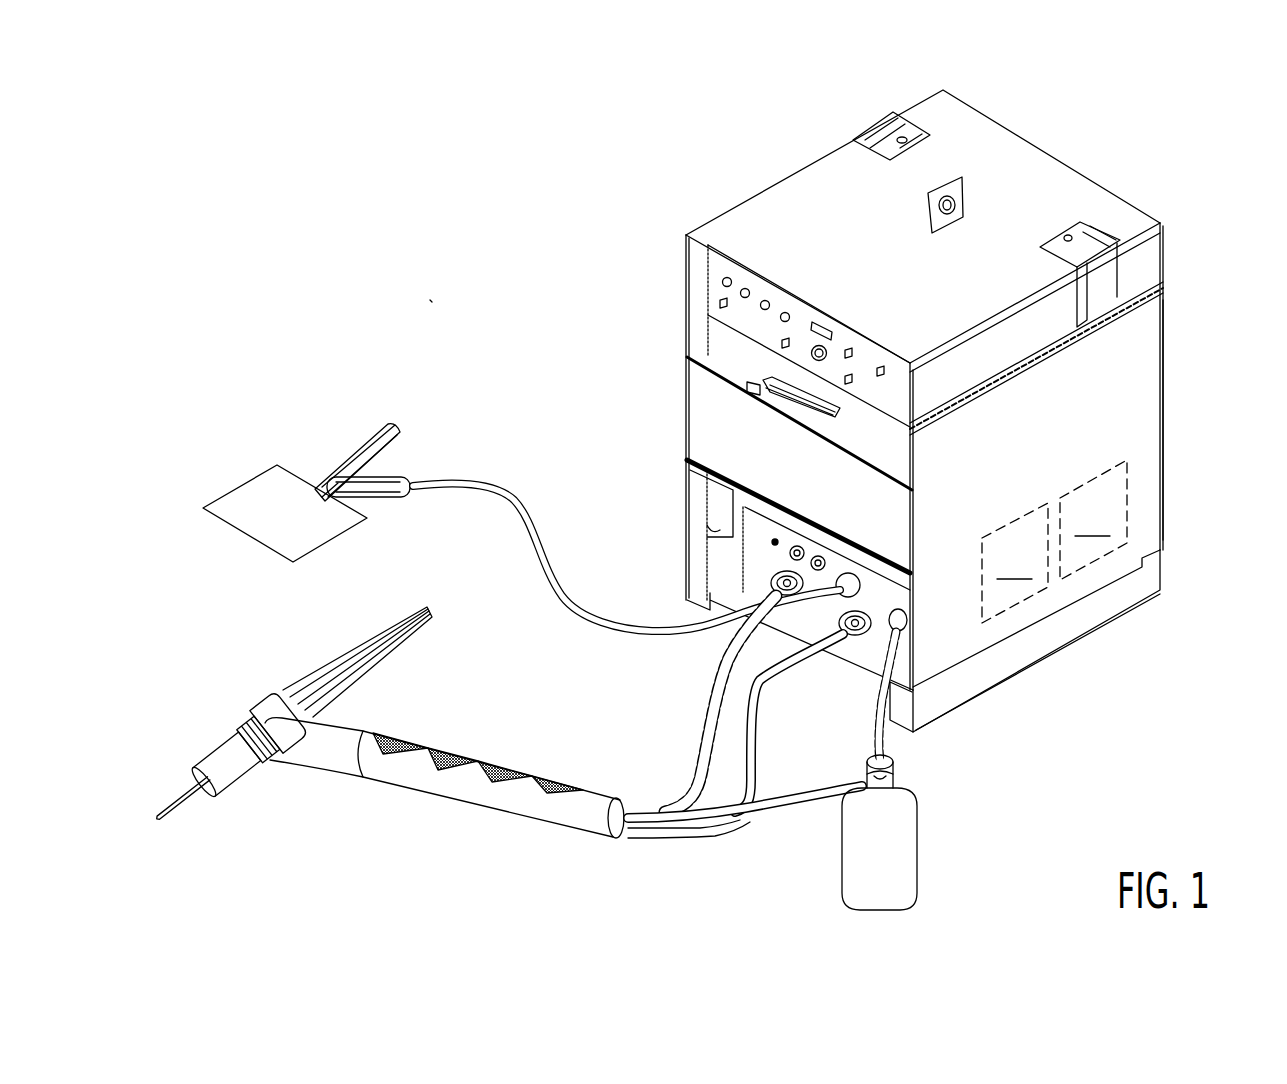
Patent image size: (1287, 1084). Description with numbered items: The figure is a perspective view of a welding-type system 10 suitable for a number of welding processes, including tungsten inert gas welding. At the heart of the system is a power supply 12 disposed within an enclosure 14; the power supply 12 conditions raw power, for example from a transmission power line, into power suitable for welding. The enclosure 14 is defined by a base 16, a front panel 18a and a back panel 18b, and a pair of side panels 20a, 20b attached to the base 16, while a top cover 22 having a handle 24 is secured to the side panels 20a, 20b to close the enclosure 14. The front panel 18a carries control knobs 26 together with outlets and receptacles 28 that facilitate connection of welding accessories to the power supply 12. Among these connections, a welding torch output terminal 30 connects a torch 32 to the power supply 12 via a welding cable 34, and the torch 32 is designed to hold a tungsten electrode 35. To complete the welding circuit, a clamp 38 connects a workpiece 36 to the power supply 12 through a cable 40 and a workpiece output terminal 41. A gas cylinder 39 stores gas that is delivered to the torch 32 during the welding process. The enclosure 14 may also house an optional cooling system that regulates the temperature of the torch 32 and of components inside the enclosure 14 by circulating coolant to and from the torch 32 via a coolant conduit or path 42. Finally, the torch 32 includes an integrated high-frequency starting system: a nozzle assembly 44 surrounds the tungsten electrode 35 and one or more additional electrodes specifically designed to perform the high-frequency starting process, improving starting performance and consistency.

The welding-type system 10 is at (433, 326).
The power supply 12 is at (1113, 150).
The enclosure 14 is at (765, 190).
The base 16 is at (877, 723).
The front panel 18a is at (898, 535).
The back panel 18b is at (1174, 423).
The side panel 20a is at (1060, 496).
The side panel 20b is at (672, 286).
The top cover 22 is at (882, 263).
The handle 24 is at (958, 182).
The control knobs 26 is at (826, 366).
The outlets and receptacles 28 is at (770, 554).
The welding torch output terminal 30 is at (860, 640).
The torch 32 is at (450, 787).
The welding cable 34 is at (710, 840).
The tungsten electrode 35 is at (185, 797).
The workpiece 36 is at (254, 519).
The clamp 38 is at (357, 453).
The gas cylinder 39 is at (908, 860).
The cable 40 is at (453, 485).
The workpiece output terminal 41 is at (774, 598).
The coolant conduit 42 is at (700, 758).
The nozzle assembly 44 is at (232, 781).